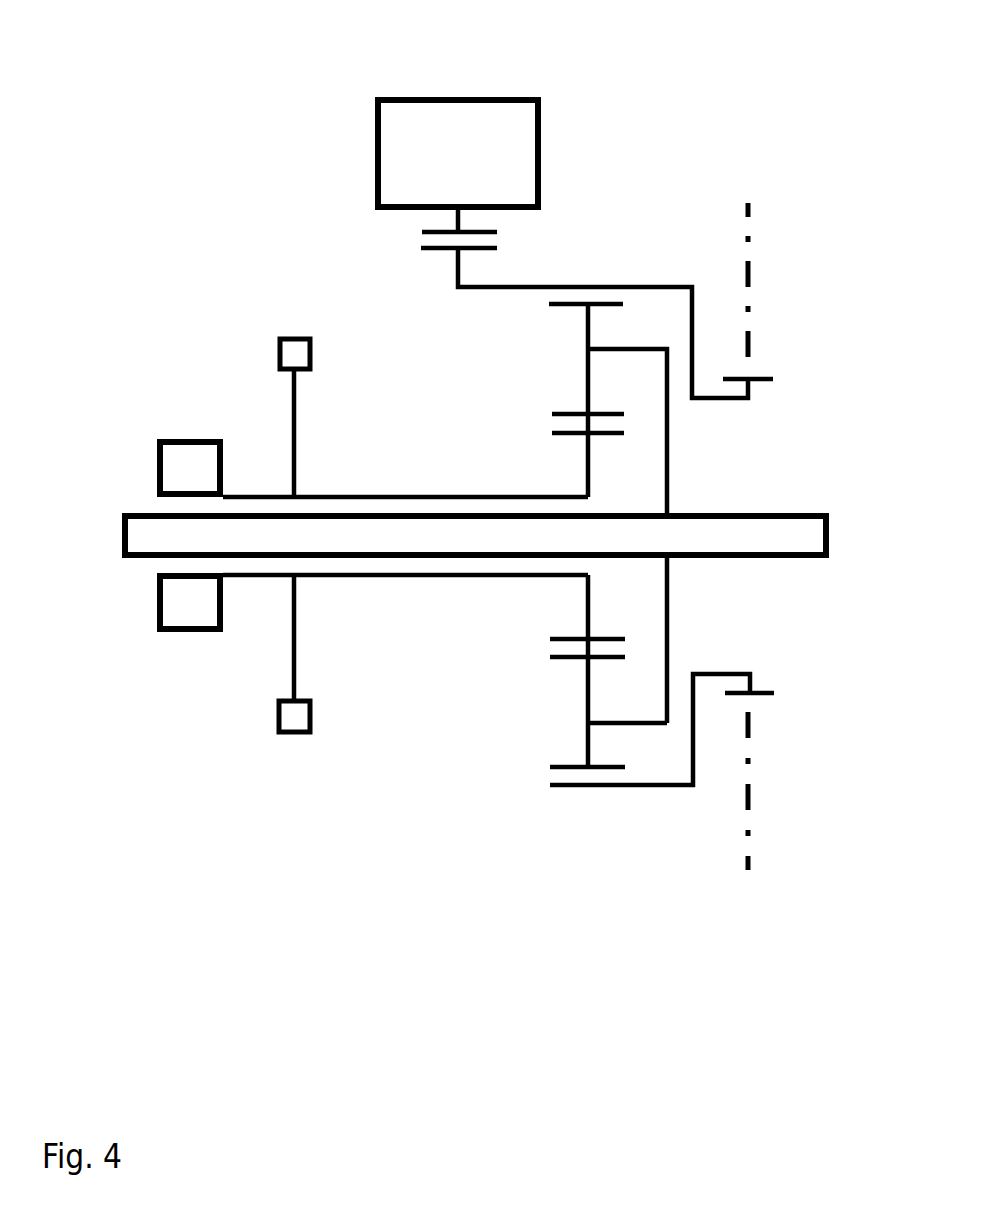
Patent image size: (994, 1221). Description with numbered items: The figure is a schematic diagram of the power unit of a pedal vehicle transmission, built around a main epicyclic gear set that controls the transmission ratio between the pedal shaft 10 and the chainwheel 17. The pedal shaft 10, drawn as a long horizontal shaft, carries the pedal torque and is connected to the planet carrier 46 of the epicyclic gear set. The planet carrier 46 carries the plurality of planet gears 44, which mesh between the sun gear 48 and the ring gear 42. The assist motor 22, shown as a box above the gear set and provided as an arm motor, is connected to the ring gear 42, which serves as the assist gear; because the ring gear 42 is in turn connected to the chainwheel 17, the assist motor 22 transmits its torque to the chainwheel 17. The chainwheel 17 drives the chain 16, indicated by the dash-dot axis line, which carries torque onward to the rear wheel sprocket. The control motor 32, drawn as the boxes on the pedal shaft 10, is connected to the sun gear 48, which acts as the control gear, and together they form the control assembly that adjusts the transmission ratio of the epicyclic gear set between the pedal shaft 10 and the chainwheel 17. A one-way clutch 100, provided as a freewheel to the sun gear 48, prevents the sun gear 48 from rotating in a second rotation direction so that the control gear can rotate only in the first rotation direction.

The pedal shaft 10 is at (122, 536).
The chain 16 is at (748, 275).
The chainwheel 17 is at (750, 384).
The assist motor 22 is at (378, 158).
The control motor 32 is at (158, 443).
The ring gear 42 is at (590, 287).
The planet gears 44 is at (588, 330).
The planet carrier 46 is at (667, 413).
The sun gear 48 is at (588, 487).
The one-way clutch 100 is at (280, 349).